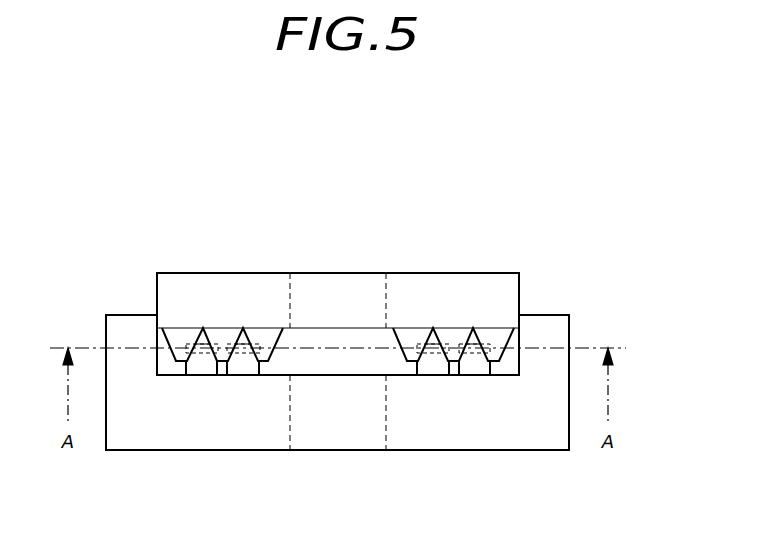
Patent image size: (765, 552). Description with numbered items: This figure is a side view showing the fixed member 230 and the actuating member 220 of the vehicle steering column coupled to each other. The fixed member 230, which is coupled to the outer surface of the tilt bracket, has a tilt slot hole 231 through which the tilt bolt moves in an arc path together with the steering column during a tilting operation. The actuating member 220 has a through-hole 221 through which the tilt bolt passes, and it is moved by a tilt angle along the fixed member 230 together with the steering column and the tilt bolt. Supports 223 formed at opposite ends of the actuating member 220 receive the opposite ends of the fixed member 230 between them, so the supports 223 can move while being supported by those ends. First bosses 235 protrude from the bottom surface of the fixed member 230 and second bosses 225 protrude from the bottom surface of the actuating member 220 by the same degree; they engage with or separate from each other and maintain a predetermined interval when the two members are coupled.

The actuating member 220 is at (507, 438).
The through-hole 221 is at (290, 421).
The supports 223 is at (545, 313).
The second bosses 225 is at (480, 370).
The fixed member 230 is at (467, 280).
The tilt slot hole 231 is at (386, 292).
The first bosses 235 is at (177, 338).